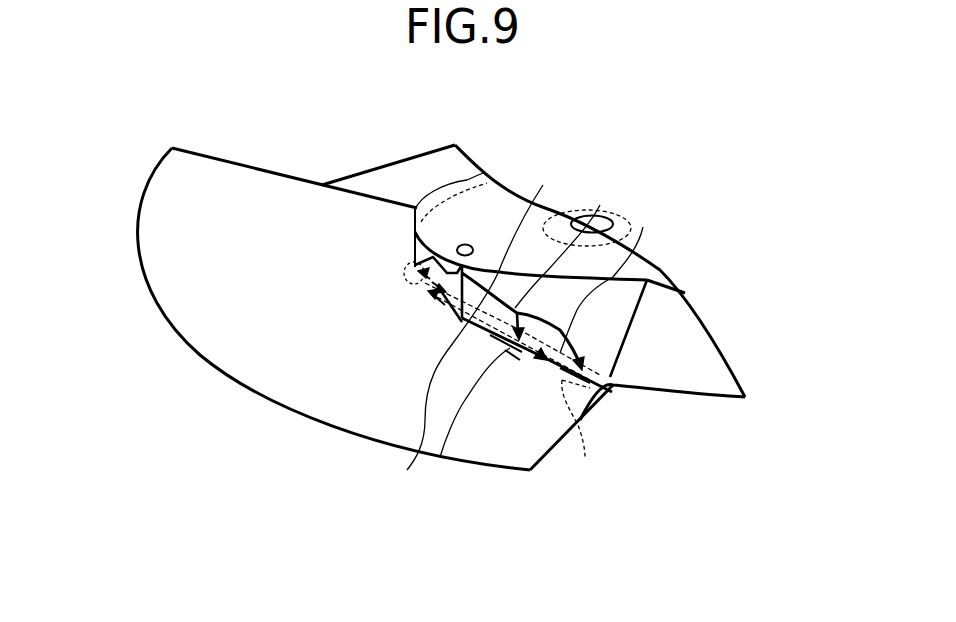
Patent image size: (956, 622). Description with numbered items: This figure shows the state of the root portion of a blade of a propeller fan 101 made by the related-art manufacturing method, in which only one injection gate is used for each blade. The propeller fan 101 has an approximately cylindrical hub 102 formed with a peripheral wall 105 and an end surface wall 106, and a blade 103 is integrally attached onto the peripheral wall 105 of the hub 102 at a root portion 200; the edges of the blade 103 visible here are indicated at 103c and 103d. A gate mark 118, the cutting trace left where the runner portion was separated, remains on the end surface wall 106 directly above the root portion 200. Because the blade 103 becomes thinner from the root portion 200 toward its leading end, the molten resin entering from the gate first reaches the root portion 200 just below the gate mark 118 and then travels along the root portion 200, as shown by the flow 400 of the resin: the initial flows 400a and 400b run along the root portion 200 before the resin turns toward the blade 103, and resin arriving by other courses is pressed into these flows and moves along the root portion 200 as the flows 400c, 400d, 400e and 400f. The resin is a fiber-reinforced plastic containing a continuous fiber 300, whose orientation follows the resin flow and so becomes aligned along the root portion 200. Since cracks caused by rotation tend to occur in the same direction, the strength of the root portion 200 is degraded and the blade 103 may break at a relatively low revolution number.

The propeller fan 101 is at (247, 158).
The hub 102 is at (600, 342).
The blade 103 is at (252, 335).
The lower edge of main surface 103c is at (543, 460).
The upper edge of main surface 103d is at (297, 183).
The peripheral wall 105 is at (598, 318).
The end surface wall 106 is at (512, 210).
The gate mark 118 is at (465, 244).
The root portion 200 is at (587, 433).
The continuous fiber 300 is at (487, 387).
The flow of the resin 400 is at (523, 270).
The flow of the resin 400a is at (435, 300).
The flow of the resin 400b is at (513, 340).
The flow of the resin 400c is at (417, 290).
The flow of the resin 400d is at (413, 265).
The flow of the resin 400e is at (578, 243).
The flow of the resin 400f is at (645, 241).